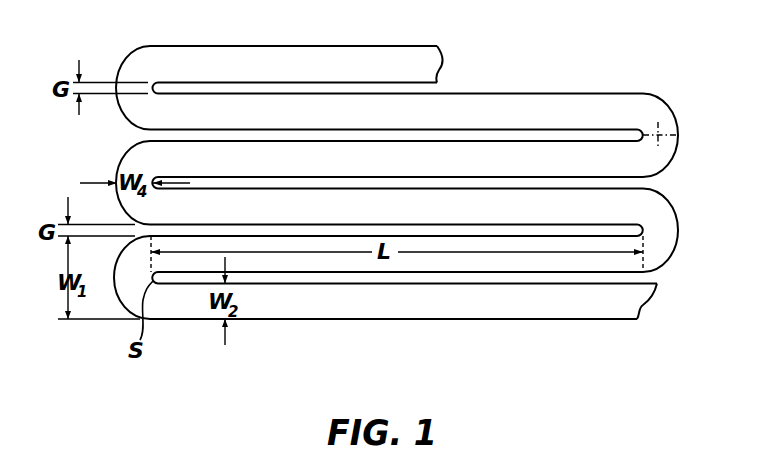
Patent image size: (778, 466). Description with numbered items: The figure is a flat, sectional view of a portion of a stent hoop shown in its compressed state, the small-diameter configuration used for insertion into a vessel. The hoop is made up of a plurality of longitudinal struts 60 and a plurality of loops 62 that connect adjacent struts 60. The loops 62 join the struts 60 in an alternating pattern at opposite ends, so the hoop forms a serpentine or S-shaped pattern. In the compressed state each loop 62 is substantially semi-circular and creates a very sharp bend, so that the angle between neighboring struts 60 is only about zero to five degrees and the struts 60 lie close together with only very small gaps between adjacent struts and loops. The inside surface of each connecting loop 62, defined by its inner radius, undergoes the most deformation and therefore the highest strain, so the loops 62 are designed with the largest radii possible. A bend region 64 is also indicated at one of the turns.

The longitudinal strut 60 is at (270, 110).
The loop 62 is at (126, 58).
The bend center 64 is at (658, 130).